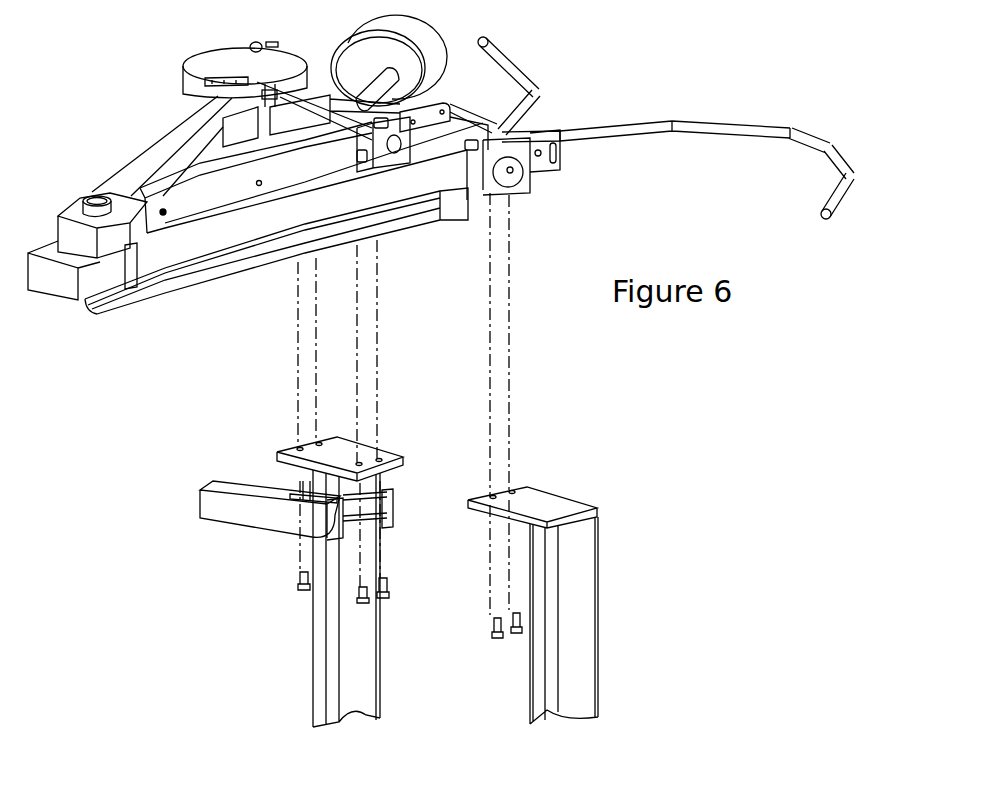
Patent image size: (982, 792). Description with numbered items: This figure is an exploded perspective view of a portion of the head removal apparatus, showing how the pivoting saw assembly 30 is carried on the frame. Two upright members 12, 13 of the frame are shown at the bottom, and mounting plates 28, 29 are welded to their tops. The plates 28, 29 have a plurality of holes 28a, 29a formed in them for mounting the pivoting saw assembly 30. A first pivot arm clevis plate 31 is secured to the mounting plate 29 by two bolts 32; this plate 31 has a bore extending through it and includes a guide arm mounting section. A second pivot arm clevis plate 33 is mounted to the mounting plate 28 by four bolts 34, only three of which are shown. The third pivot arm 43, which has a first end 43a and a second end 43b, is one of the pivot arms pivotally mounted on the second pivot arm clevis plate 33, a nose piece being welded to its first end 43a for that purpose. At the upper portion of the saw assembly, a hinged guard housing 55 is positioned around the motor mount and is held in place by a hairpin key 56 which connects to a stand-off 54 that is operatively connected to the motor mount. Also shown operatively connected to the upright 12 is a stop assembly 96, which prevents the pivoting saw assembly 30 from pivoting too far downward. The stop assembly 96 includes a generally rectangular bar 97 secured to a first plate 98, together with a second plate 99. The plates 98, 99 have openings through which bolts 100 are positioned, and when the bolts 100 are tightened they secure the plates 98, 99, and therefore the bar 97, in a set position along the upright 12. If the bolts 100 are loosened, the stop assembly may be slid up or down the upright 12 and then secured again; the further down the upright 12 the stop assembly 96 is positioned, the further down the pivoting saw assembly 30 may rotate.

The upright member 12 is at (377, 657).
The upright member 13 is at (593, 653).
The mounting plate 28 is at (277, 457).
The holes 28a is at (300, 448).
The mounting plate 29 is at (570, 497).
The holes 29a is at (513, 492).
The pivoting saw assembly 30 is at (618, 90).
The first pivot arm clevis plate 31 is at (527, 183).
The bolts 32 is at (492, 627).
The second pivot arm clevis plate 33 is at (308, 136).
The bolts 34 is at (298, 583).
The third pivot arm 43 is at (248, 139).
The first end of third pivot arm 43a is at (300, 90).
The second end of third pivot arm 43b is at (227, 125).
The stand-off 54 is at (256, 42).
The guard housing 55 is at (208, 55).
The hairpin key 56 is at (275, 42).
The stop assembly 96 is at (410, 517).
The rectangular bar 97 is at (243, 526).
The first plate 98 is at (295, 495).
The second plate 99 is at (388, 488).
The bolts 100 is at (383, 527).